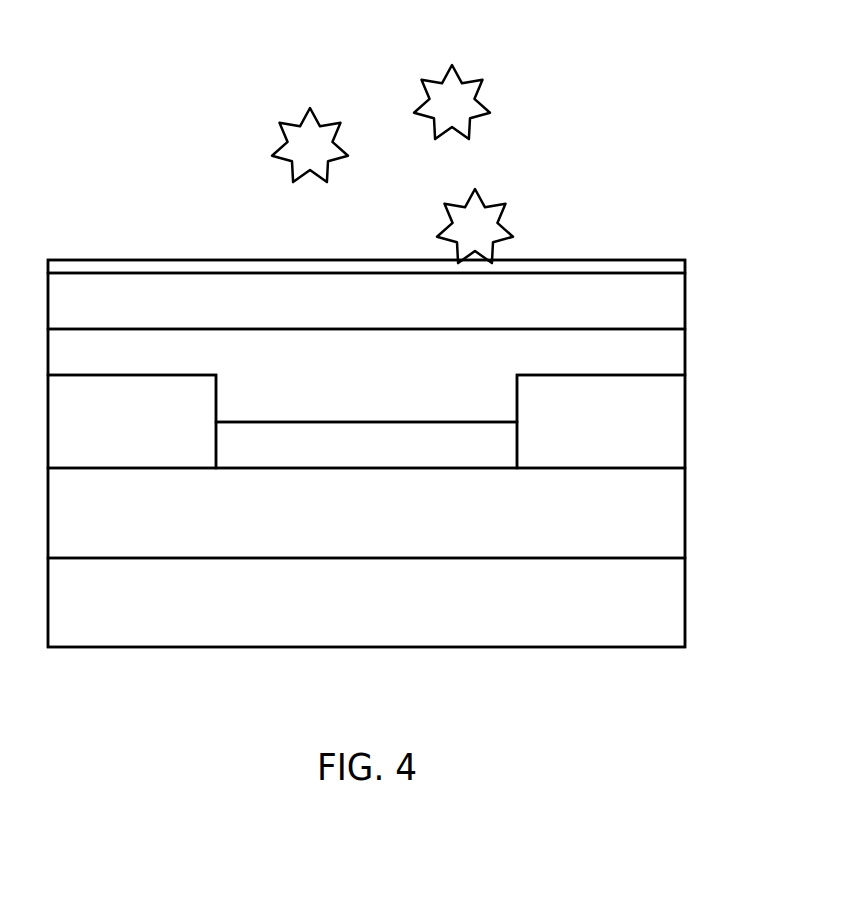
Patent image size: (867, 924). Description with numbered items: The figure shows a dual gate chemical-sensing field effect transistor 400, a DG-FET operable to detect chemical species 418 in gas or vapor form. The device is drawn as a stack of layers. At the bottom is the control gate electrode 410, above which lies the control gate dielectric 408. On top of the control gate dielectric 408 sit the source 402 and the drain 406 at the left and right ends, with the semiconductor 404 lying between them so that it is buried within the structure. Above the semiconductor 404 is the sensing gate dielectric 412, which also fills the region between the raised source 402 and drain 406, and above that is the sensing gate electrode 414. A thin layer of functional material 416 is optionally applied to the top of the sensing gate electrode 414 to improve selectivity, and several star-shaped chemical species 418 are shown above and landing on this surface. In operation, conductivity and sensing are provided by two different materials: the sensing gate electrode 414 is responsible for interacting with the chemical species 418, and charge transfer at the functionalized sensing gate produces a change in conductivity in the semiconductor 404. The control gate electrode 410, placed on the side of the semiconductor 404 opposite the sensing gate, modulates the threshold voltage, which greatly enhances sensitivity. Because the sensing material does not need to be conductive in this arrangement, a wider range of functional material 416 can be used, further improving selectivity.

The dual gate chemical-sensing field effect transistor 400 is at (156, 125).
The source 402 is at (152, 449).
The semiconductor 404 is at (474, 456).
The drain 406 is at (620, 449).
The control gate dielectric 408 is at (517, 526).
The control gate electrode 410 is at (518, 615).
The sensing gate dielectric 412 is at (386, 402).
The sensing gate electrode 414 is at (523, 314).
The functional material 416 is at (685, 190).
The chemical species 418 is at (478, 82).